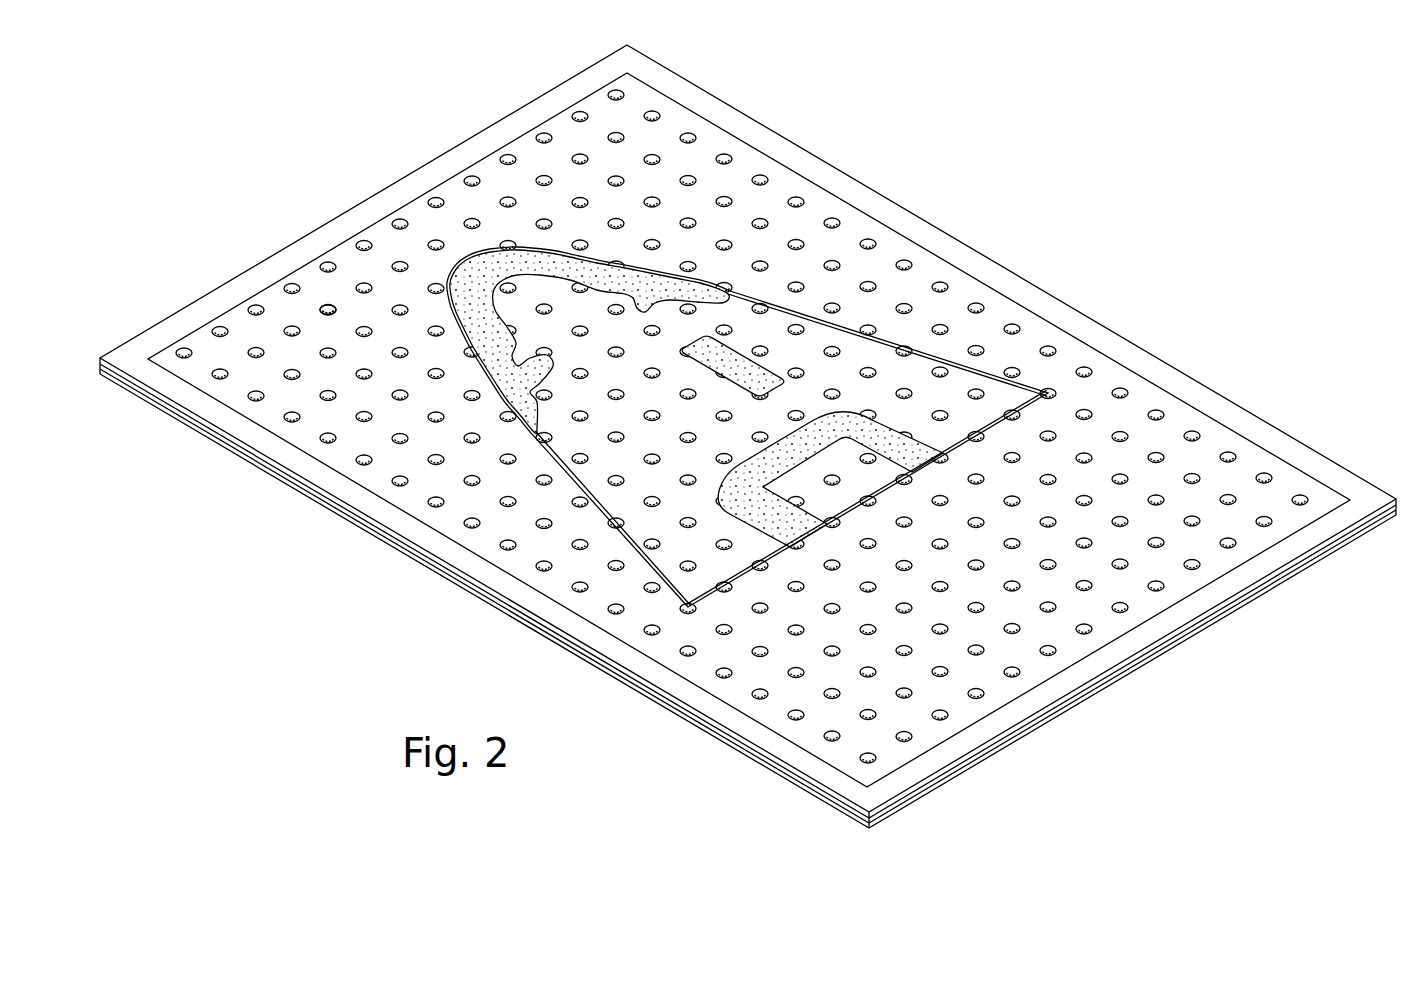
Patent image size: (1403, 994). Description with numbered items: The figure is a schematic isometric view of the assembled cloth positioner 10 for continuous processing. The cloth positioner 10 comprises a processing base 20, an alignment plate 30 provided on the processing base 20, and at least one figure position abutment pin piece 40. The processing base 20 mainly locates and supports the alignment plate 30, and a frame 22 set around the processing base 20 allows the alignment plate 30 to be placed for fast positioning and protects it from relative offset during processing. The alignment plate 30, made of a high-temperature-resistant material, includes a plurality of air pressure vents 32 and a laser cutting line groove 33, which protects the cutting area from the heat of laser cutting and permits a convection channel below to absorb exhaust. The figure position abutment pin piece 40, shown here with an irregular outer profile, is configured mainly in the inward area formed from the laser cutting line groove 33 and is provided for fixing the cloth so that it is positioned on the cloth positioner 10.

The cloth positioner 10 is at (1125, 232).
The processing base 20 is at (377, 548).
The frame 22 is at (363, 505).
The alignment plate 30 is at (350, 260).
The air pressure vent 32 is at (327, 305).
The laser cutting line groove 33 is at (843, 328).
The figure position abutment pin piece 40 is at (607, 262).